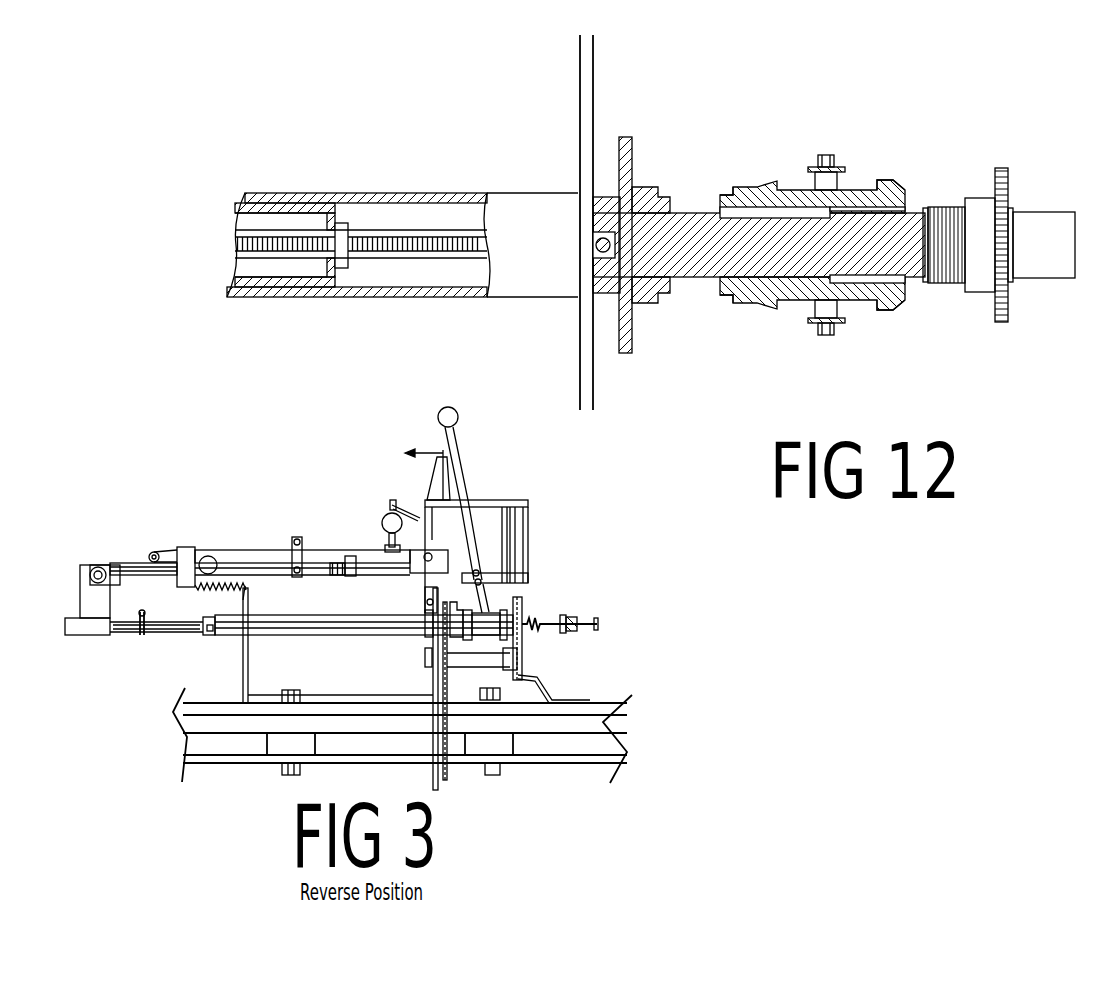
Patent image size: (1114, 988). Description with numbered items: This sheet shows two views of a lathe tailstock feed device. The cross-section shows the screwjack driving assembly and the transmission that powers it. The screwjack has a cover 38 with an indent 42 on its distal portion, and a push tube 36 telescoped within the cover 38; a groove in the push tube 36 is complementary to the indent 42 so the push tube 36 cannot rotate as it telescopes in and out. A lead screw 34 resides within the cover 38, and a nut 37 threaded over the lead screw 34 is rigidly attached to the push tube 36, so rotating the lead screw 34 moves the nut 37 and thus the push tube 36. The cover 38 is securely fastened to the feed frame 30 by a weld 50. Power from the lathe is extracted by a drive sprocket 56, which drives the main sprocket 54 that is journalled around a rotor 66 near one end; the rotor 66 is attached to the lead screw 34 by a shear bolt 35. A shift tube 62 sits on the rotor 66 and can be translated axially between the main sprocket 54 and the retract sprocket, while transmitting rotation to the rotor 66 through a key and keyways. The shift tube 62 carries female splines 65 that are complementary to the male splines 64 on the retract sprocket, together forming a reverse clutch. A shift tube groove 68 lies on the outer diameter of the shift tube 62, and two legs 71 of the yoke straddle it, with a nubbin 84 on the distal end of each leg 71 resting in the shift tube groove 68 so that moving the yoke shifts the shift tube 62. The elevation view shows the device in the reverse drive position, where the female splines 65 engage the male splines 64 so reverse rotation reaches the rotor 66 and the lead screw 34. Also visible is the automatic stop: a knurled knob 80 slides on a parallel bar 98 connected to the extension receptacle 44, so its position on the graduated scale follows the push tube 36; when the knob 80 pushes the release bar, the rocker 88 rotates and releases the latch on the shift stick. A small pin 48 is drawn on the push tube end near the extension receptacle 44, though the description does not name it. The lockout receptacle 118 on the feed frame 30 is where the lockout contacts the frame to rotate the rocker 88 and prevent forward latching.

In FIG. 3, the feed frame 30 is at (243, 686).
In FIG. 12, the lead screw 34 is at (404, 232).
In FIG. 12, the shear bolt 35 is at (606, 238).
In FIG. 12, the push tube 36 is at (305, 192).
In FIG. 3, the push tube 36 is at (127, 638).
In FIG. 12, the nut 37 is at (340, 226).
In FIG. 12, the cover 38 is at (301, 298).
In FIG. 3, the cover 38 is at (322, 640).
In FIG. 3, the indent 42 is at (212, 634).
In FIG. 3, the extension receptacle 44 is at (65, 627).
In FIG. 3, the pin 48 is at (146, 638).
In FIG. 12, the weld 50 is at (579, 193).
In FIG. 12, the main sprocket 54 is at (632, 177).
In FIG. 12, the drive sprocket 56 is at (1002, 318).
In FIG. 12, the shift tube 62 is at (758, 190).
In FIG. 12, the male splines 64 is at (977, 200).
In FIG. 12, the female splines 65 is at (898, 208).
In FIG. 12, the rotor 66 is at (945, 212).
In FIG. 12, the shift tube groove 68 is at (803, 192).
In FIG. 12, the legs 71 is at (845, 166).
In FIG. 3, the knurled knob 80 is at (207, 557).
In FIG. 12, the nubbin 84 is at (833, 181).
In FIG. 3, the rocker 88 is at (427, 568).
In FIG. 3, the parallel bar 98 is at (132, 570).
In FIG. 3, the lockout receptacle 118 is at (187, 545).